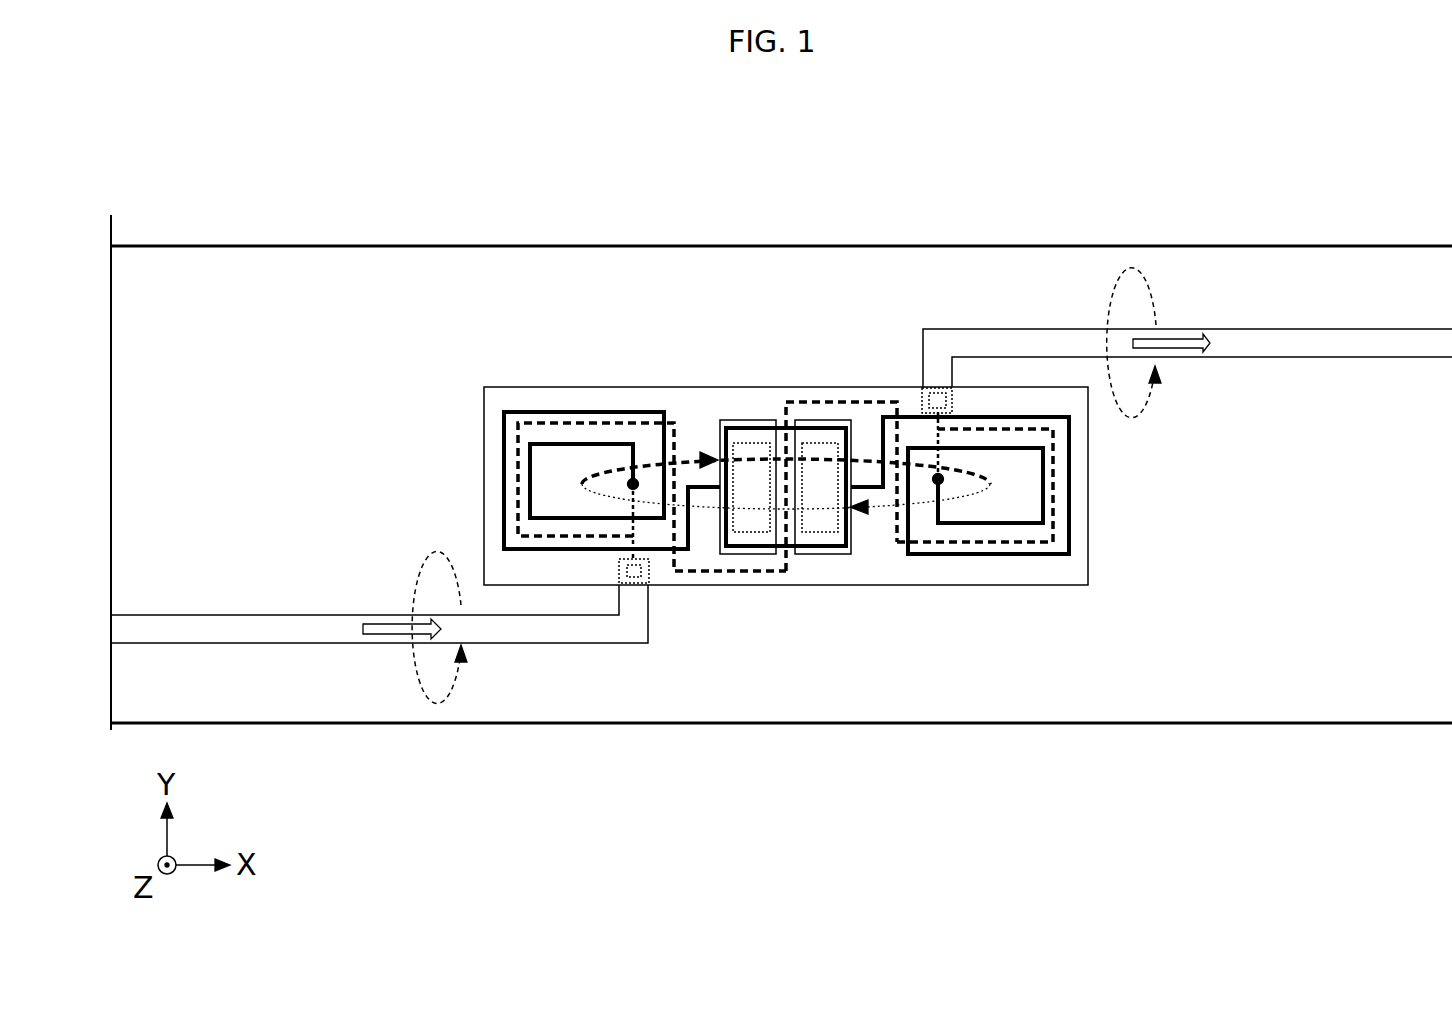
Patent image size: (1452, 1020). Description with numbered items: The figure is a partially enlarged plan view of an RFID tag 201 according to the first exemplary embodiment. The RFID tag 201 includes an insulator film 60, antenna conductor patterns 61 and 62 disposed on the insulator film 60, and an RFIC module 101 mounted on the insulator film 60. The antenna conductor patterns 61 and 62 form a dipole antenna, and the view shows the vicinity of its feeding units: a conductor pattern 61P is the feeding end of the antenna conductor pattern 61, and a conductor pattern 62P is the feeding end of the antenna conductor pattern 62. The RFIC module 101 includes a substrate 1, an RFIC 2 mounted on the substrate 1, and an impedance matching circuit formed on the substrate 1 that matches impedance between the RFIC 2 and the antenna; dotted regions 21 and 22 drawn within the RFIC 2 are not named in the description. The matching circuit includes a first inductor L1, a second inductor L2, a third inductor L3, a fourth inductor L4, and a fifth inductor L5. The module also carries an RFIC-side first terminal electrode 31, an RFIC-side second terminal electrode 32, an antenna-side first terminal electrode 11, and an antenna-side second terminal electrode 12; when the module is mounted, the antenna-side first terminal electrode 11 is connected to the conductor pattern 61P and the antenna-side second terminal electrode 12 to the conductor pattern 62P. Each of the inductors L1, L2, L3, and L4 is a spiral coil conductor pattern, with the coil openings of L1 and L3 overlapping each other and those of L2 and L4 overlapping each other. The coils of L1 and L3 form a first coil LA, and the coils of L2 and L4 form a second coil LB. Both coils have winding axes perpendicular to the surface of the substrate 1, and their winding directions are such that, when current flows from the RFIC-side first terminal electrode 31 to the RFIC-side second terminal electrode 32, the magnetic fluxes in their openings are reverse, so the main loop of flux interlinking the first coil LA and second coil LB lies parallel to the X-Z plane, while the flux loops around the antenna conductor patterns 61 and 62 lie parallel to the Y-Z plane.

The RFID tag 201 is at (453, 125).
The insulator film 60 is at (743, 258).
The antenna conductor pattern 61 is at (315, 632).
The antenna conductor pattern 62 is at (1240, 338).
The conductor pattern 61P is at (650, 572).
The conductor pattern 62P is at (925, 395).
The antenna-side first terminal electrode 11 is at (633, 580).
The antenna-side second terminal electrode 12 is at (938, 395).
The RFIC module 101 is at (1088, 585).
The substrate 1 is at (739, 434).
The RFIC 2 is at (802, 533).
The first capacitor electrode 21 is at (760, 440).
The second capacitor electrode 22 is at (818, 535).
The RFIC-side first terminal electrode 31 is at (735, 420).
The RFIC-side second terminal electrode 32 is at (845, 554).
The first inductor L1 is at (575, 412).
The second inductor L2 is at (998, 555).
The third inductor L3 is at (515, 481).
The fourth inductor L4 is at (1053, 487).
The fifth inductor L5 is at (818, 400).
The first coil LA is at (599, 445).
The second coil LB is at (1006, 533).